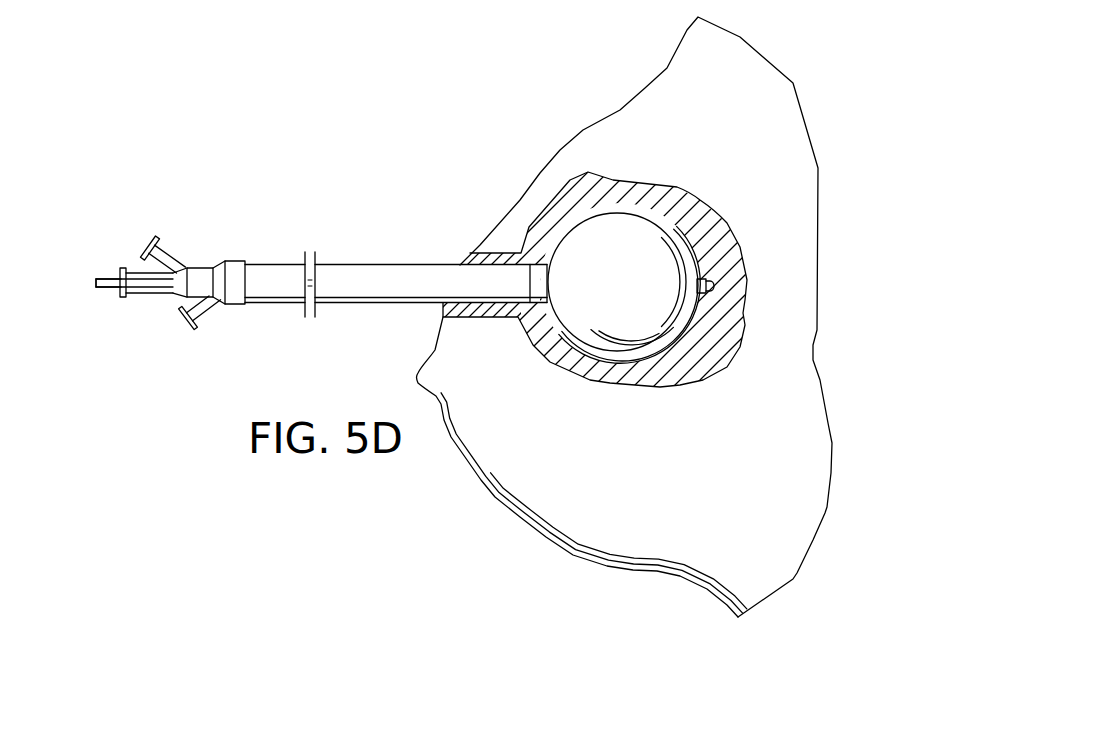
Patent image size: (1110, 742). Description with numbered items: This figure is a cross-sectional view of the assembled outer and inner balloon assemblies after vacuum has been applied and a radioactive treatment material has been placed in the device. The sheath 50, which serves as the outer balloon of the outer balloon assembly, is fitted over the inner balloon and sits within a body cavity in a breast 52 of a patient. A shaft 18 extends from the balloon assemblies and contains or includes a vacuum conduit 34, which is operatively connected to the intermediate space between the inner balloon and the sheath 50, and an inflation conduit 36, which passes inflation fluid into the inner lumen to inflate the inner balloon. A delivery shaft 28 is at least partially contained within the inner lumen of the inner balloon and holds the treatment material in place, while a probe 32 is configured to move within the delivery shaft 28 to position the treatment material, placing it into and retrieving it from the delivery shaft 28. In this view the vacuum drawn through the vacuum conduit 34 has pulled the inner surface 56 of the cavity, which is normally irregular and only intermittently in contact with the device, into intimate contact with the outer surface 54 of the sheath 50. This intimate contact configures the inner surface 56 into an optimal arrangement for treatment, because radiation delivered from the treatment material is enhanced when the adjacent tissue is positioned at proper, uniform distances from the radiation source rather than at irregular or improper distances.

The shaft 18 is at (390, 303).
The delivery shaft 28 is at (119, 273).
The probe 32 is at (98, 288).
The vacuum conduit 34 is at (178, 331).
The inflation conduit 36 is at (145, 247).
The sheath 50 is at (643, 294).
The breast 52 is at (552, 508).
The outer surface 54 is at (696, 220).
The inner surface 56 is at (623, 225).